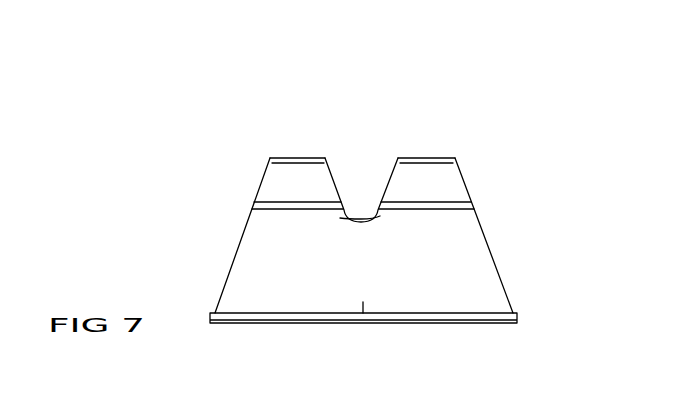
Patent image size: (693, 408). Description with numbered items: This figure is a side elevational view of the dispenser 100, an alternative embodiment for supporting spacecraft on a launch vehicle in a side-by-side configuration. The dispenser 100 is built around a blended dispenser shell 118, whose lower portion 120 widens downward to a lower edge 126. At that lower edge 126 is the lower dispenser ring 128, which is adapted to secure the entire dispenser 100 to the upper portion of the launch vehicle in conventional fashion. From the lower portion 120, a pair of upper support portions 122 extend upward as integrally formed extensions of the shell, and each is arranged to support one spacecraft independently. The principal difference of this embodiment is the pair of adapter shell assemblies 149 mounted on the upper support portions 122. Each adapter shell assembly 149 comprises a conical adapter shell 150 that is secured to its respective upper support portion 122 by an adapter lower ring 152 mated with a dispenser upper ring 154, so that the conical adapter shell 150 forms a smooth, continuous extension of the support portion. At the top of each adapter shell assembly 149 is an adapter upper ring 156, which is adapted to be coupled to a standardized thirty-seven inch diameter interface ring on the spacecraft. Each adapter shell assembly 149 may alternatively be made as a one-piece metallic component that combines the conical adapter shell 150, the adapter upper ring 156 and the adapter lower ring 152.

The dispenser 100 is at (287, 93).
The dispenser shell 118 is at (255, 310).
The lower portion 120 is at (490, 295).
The upper support portions 122 is at (316, 219).
The lower edge 126 is at (229, 312).
The lower dispenser ring 128 is at (477, 323).
The adapter shell assembly 149 is at (152, 152).
The conical adapter shell 150 is at (274, 180).
The adapter lower ring 152 is at (255, 203).
The dispenser upper ring 154 is at (255, 205).
The adapter upper ring 156 is at (266, 157).